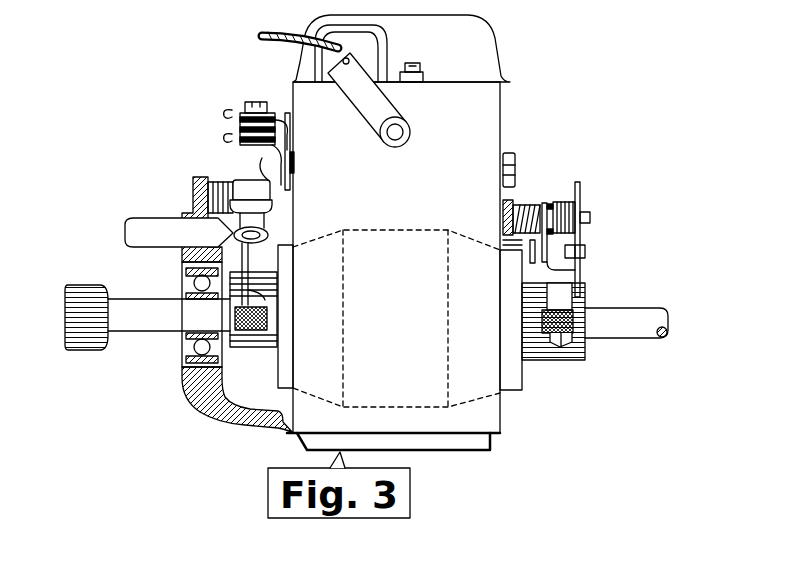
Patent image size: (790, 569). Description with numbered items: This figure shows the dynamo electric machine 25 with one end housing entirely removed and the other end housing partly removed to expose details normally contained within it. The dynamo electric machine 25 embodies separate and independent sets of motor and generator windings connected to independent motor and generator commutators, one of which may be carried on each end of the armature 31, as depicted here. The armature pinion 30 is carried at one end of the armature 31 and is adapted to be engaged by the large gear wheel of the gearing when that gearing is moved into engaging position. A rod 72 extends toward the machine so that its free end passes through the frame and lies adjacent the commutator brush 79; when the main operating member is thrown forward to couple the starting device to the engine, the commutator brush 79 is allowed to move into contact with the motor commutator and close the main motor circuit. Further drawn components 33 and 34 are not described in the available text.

The dynamo electric machine 25 is at (388, 232).
The armature pinion 30 is at (82, 313).
The armature 31 is at (508, 382).
The brush holder 33 is at (265, 352).
The coupling 34 is at (557, 353).
The rod 72 is at (168, 233).
The commutator brush 79 is at (248, 192).